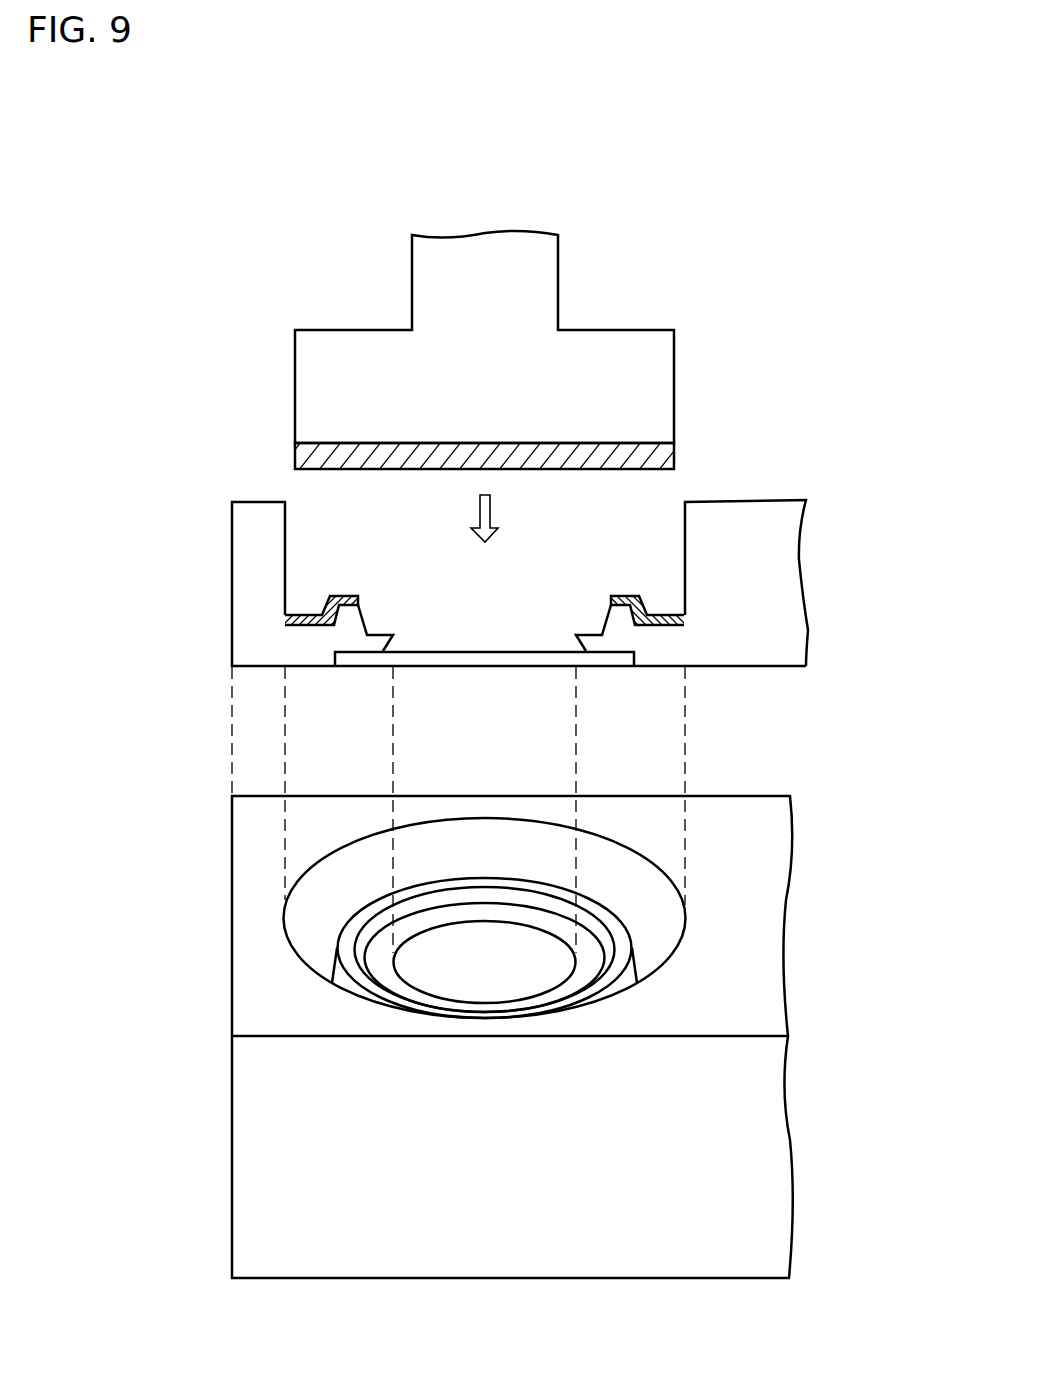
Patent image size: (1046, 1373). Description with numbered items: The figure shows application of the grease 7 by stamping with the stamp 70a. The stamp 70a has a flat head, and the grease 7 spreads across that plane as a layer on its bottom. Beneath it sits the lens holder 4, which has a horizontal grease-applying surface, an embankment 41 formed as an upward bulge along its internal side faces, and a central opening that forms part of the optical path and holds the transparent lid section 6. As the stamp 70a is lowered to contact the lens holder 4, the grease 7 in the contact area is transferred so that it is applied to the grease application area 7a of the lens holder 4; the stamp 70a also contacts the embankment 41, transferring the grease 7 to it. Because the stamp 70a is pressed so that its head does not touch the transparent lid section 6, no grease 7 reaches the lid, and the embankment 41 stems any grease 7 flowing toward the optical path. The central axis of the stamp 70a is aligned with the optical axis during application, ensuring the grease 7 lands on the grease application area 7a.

The stamp 70a is at (662, 373).
The grease 7 is at (662, 455).
The lens holder 4 is at (788, 555).
The embankment 41 is at (352, 618).
The grease application area 7a is at (313, 625).
The transparent lid section 6 is at (489, 660).